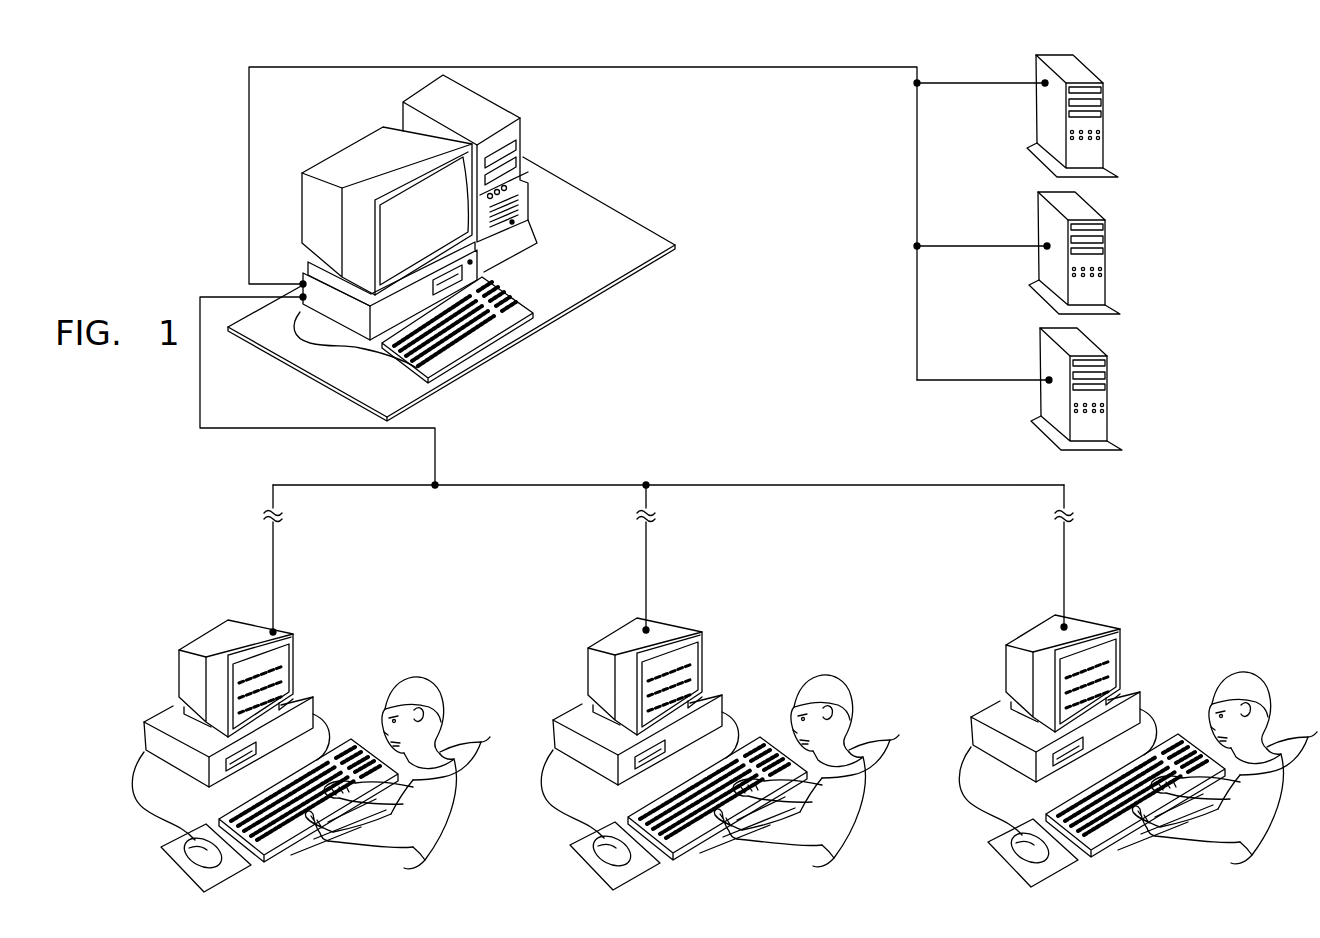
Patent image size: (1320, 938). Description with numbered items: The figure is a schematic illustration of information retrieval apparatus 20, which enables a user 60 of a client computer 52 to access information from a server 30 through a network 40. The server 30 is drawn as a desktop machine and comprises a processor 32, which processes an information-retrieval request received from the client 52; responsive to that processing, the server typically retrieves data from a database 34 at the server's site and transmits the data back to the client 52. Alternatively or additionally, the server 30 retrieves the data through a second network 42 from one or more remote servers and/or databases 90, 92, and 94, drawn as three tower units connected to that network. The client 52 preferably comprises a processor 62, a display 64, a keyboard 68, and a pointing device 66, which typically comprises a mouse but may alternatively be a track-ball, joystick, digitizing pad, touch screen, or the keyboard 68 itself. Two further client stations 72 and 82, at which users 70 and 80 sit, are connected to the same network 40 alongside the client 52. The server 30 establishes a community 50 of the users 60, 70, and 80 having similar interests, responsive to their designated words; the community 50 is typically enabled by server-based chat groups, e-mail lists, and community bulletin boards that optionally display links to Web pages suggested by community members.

The information retrieval apparatus 20 is at (111, 93).
The server 30 is at (222, 123).
The processor 32 is at (327, 309).
The database 34 is at (518, 118).
The network 40 is at (436, 436).
The network 42 is at (713, 68).
The community 50 is at (803, 463).
The client computer 52 is at (333, 657).
The user 60 is at (412, 680).
The processor 62 is at (168, 718).
The display 64 is at (221, 636).
The pointing device 66 is at (206, 857).
The keyboard 68 is at (352, 741).
The user 70 is at (820, 680).
The client workstation 72 is at (747, 652).
The user 80 is at (1238, 676).
The client workstation 82 is at (1165, 650).
The remote server and/or database 90 is at (1107, 137).
The remote server and/or database 92 is at (1109, 270).
The remote server and/or database 94 is at (1113, 403).